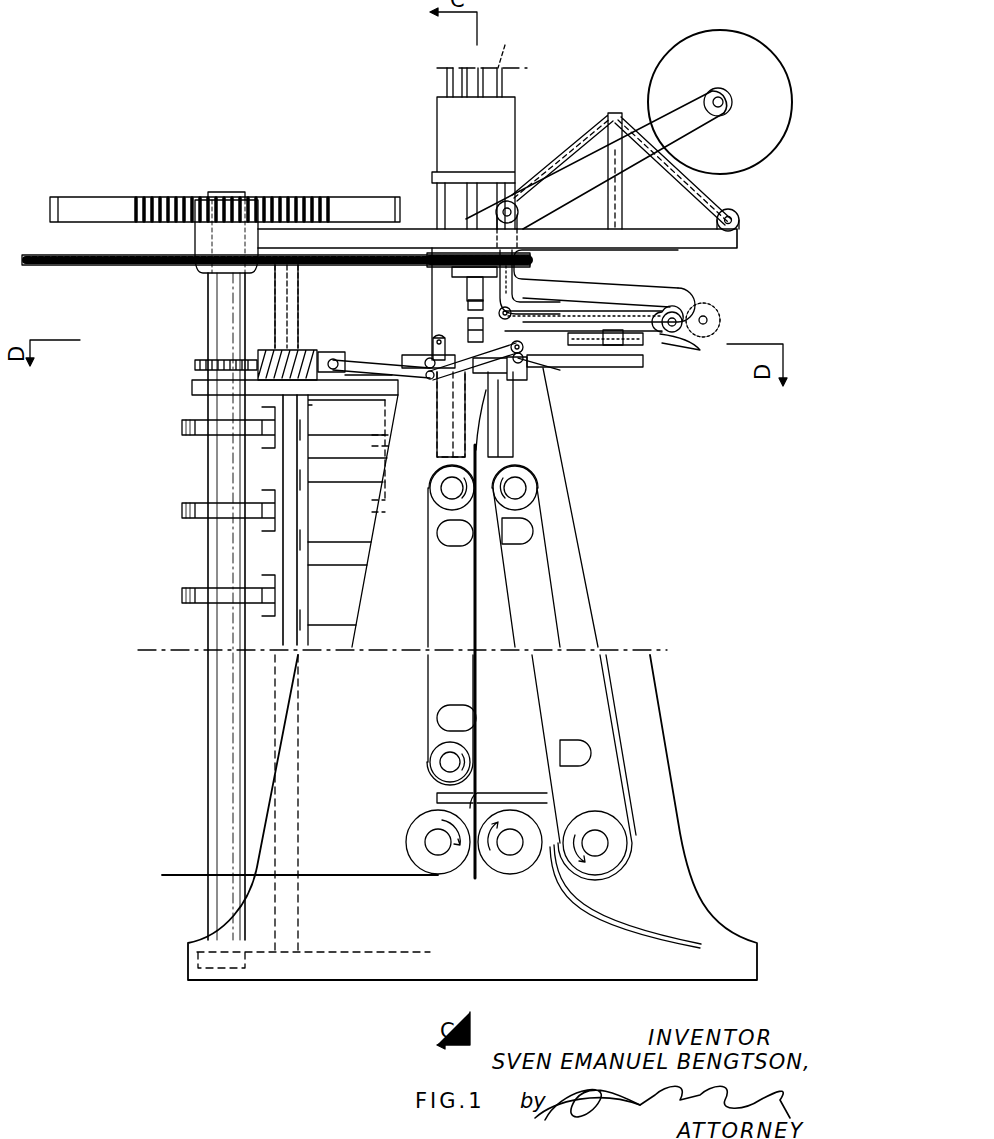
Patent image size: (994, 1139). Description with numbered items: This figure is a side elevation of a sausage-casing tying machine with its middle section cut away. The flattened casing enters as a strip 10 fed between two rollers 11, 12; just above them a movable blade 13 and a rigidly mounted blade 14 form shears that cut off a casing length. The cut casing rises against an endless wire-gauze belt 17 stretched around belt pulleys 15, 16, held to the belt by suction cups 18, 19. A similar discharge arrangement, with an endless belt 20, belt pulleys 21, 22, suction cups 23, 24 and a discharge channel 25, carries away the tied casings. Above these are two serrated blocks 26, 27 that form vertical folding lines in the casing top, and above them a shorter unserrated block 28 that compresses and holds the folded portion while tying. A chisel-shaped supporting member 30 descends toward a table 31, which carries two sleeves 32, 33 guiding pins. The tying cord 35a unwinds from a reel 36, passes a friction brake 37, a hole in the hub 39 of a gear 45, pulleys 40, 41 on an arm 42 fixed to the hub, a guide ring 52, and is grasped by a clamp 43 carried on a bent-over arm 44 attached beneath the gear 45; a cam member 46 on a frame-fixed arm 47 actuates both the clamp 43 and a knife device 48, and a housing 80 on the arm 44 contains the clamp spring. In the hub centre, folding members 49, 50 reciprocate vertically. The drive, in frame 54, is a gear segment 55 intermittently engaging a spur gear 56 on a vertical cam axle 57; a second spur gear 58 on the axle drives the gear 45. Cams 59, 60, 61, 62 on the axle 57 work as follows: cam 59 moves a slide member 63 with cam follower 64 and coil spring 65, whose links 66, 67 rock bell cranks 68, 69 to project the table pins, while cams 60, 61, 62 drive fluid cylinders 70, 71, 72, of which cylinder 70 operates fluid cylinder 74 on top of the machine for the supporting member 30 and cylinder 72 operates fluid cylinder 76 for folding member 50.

The strip 10 is at (476, 663).
The roller 11 is at (405, 840).
The roller 12 is at (508, 872).
The blade 13 is at (437, 797).
The blade 14 is at (505, 798).
The belt pulley 15 is at (430, 767).
The belt pulley 16 is at (436, 482).
The endless belt 17 is at (430, 672).
The suction cup 18 is at (452, 707).
The suction cup 19 is at (453, 547).
The endless belt 20 is at (540, 677).
The belt pulley 21 is at (525, 480).
The belt pulley 22 is at (617, 866).
The suction cup 23 is at (512, 545).
The suction cup 24 is at (566, 740).
The discharge channel 25 is at (566, 902).
The block 26 is at (437, 420).
The block 27 is at (498, 410).
The block 28 is at (540, 368).
The supporting member 30 is at (468, 322).
The table 31 is at (385, 352).
The sleeve 32 is at (432, 338).
The sleeve 33 is at (522, 343).
The tying cord 35a is at (720, 190).
The reel 36 is at (662, 56).
The friction or brake means 37 is at (742, 218).
The hub 39 is at (432, 232).
The pulley 40 is at (518, 300).
The pulley 41 is at (690, 308).
The arm 42 is at (523, 307).
The clamp 43 is at (660, 330).
The bent-over arm 44 is at (647, 286).
The gear 45 is at (532, 262).
The cam member 46 is at (641, 345).
The arm 47 is at (631, 368).
The knife device 48 is at (613, 345).
The folding member 49 is at (467, 285).
The folding member 50 is at (468, 302).
The guide ring 52 is at (693, 338).
The machine frame 54 is at (585, 512).
The gear segment 55 is at (345, 197).
The spur gear 56 is at (287, 197).
The cam axle 57 is at (208, 450).
The second spur gear 58 is at (143, 267).
The cam member 59 is at (195, 363).
The cam member 60 is at (183, 427).
The cam member 61 is at (183, 510).
The cam member 62 is at (183, 595).
The slide member 63 is at (329, 352).
The cam follower 64 is at (247, 352).
The coil spring 65 is at (300, 348).
The link 66 is at (355, 362).
The link 67 is at (432, 378).
The bell crank 68 is at (415, 360).
The bell crank 69 is at (525, 362).
The fluid cylinder 70 is at (333, 452).
The fluid cylinder 71 is at (325, 535).
The fluid cylinder 72 is at (317, 622).
The fluid cylinder 74 is at (517, 106).
The fluid cylinder 76 is at (610, 116).
The housing 80 is at (721, 316).